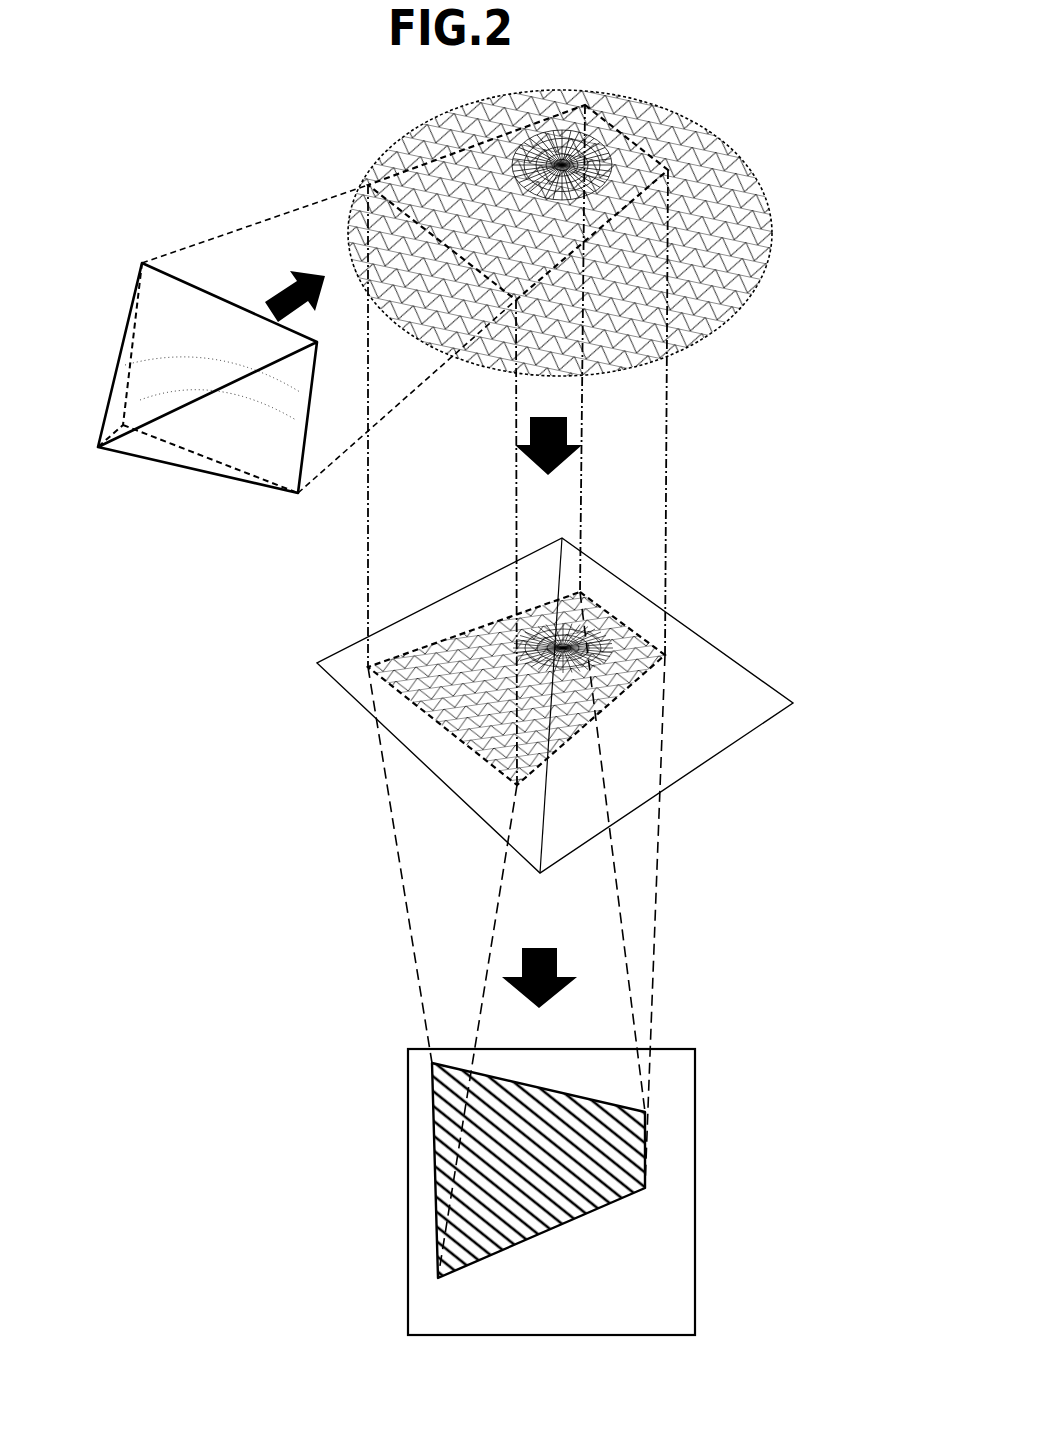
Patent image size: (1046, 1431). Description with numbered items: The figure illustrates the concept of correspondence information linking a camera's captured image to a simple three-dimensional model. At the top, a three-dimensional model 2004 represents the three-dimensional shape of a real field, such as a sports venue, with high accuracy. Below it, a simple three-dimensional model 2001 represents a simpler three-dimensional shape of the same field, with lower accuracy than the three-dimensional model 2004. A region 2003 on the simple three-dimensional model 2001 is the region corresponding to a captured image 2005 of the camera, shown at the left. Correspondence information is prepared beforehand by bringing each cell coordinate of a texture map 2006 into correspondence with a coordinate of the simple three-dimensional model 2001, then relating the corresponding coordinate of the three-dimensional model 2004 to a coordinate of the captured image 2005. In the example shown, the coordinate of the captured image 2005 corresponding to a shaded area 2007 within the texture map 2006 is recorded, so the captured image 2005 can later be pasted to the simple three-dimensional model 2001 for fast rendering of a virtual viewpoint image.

The simple three-dimensional model 2001 is at (757, 675).
The region 2003 is at (637, 630).
The three-dimensional model 2004 is at (773, 212).
The captured image 2005 is at (142, 307).
The texture map 2006 is at (695, 1082).
The shaded area 2007 is at (437, 1236).